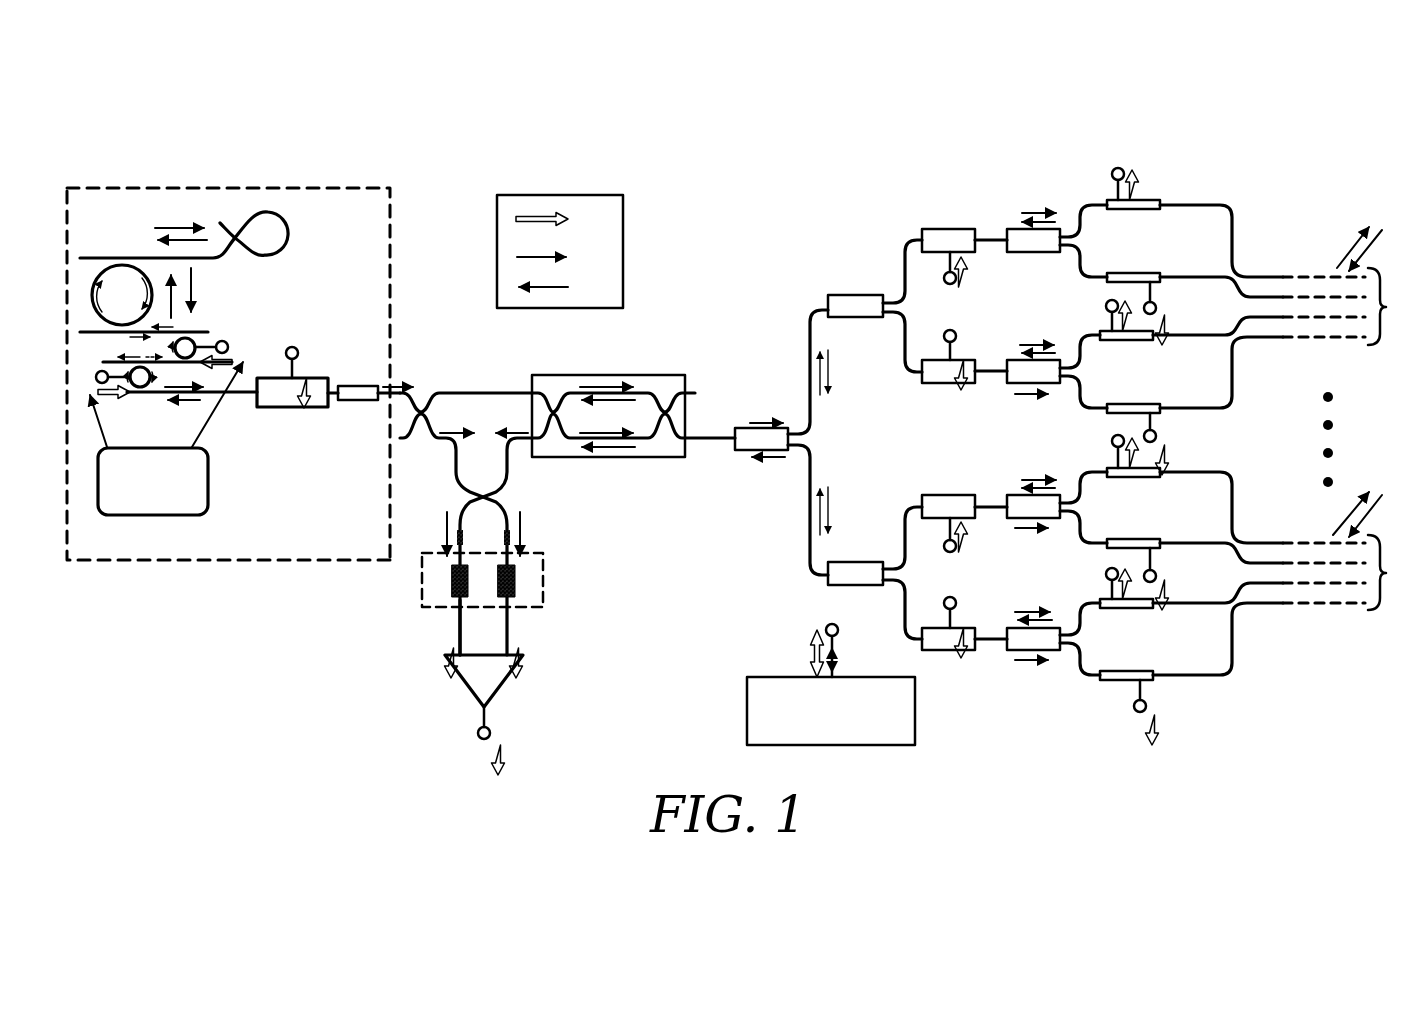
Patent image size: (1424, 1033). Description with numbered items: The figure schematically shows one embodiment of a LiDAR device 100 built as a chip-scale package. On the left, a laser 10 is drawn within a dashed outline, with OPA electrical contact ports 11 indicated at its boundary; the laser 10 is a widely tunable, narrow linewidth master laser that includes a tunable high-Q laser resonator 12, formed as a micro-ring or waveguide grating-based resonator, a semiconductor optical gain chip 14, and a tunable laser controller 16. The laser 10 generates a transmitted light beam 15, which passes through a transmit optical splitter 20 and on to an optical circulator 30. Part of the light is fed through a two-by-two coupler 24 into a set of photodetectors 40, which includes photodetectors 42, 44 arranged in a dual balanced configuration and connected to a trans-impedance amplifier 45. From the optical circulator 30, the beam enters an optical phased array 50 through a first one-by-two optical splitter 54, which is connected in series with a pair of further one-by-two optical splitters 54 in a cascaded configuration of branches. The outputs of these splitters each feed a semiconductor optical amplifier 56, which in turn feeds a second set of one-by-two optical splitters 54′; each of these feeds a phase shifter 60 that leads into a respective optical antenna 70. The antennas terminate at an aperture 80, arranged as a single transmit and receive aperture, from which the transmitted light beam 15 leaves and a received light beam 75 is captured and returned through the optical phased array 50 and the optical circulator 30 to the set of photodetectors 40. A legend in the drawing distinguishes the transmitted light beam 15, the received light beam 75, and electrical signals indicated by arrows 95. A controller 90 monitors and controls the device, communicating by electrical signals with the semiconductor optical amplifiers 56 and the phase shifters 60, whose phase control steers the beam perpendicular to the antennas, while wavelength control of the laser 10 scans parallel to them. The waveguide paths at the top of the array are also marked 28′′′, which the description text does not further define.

The laser 10 is at (343, 220).
The OPA electrical contact ports 11 is at (328, 188).
The tunable high-Q laser resonator 12 is at (183, 298).
The semiconductor optical gain chip 14 is at (295, 407).
The transmitted light beam 15 is at (600, 271).
The tunable laser controller 16 is at (139, 495).
The transmit optical splitter 20 is at (471, 465).
The 2×2 coupler 24 is at (497, 500).
The optical paths 28′′′ is at (1202, 170).
The optical circulator 30 is at (652, 375).
The set of photodetectors 40 is at (545, 580).
The photodetector 42 is at (450, 582).
The photodetector 44 is at (515, 582).
The trans-impedance amplifier 45 is at (462, 680).
The optical phased array 50 is at (1040, 188).
The 1×2 optical splitter 54 is at (420, 400).
The second set of 1×2 optical splitters 54′ is at (1020, 229).
The semiconductor optical amplifier 56 is at (930, 229).
The phase shifter 60 is at (1143, 200).
The optical antenna 70 is at (1320, 268).
The received light beam 75 is at (600, 300).
The aperture 80 is at (1389, 321).
The controller 90 is at (816, 724).
The arrows 95 is at (600, 233).
The LiDAR device 100 is at (700, 178).